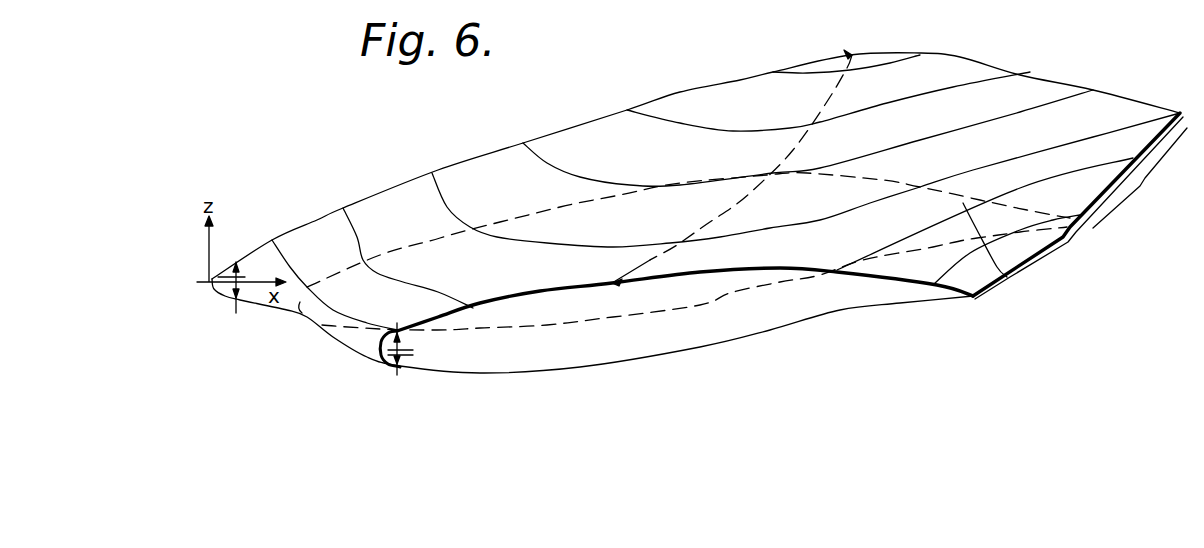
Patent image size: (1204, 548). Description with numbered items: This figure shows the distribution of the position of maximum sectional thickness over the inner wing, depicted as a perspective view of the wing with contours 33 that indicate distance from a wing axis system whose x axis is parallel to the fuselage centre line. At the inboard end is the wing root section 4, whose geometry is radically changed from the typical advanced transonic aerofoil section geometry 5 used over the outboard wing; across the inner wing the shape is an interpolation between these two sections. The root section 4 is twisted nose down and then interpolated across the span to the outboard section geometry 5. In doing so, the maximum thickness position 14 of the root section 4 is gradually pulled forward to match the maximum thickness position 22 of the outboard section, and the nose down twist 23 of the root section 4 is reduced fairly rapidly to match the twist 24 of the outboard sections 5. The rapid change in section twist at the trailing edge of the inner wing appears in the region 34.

The wing root section 4 is at (317, 220).
The outboard wing section geometry 5 is at (465, 372).
The maximum thickness position of root section 14 is at (852, 55).
The maximum thickness position of outboard wing section 22 is at (612, 283).
The nose down twist of root section 23 is at (236, 263).
The twist of outboard sections 24 is at (396, 369).
The contours 33 is at (1007, 277).
The region of rapid twist change 34 is at (1140, 178).